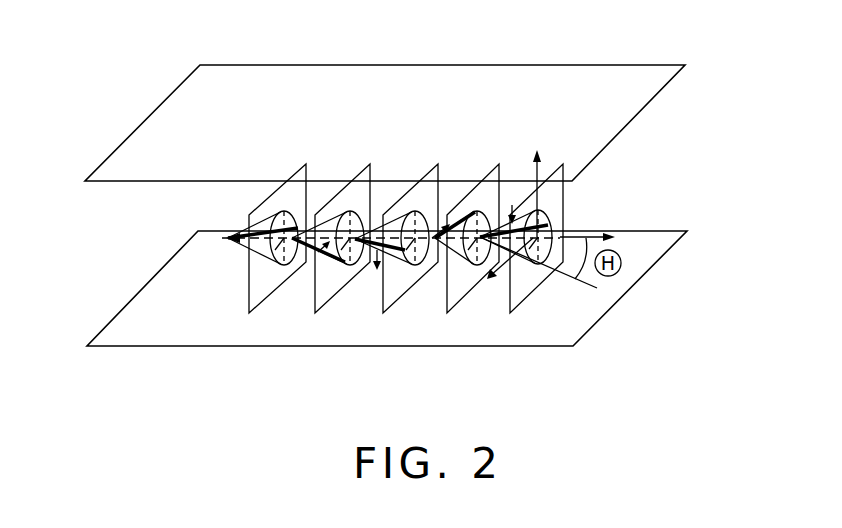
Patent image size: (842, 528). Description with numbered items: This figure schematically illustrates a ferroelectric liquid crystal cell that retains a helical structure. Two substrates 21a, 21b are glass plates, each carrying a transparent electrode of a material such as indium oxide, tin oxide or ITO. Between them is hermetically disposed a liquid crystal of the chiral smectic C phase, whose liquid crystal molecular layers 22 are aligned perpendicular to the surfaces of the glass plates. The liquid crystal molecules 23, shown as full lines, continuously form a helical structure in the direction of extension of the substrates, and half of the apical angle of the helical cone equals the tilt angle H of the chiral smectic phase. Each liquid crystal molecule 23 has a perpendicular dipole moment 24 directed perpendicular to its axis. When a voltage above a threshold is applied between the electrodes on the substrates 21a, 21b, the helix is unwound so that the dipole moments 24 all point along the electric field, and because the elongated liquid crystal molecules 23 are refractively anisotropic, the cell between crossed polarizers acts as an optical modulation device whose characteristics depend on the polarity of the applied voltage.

The substrate 21a is at (623, 67).
The substrate 21b is at (613, 302).
The liquid crystal molecular layers 22 is at (563, 198).
The liquid crystal molecules 23 is at (238, 243).
The dipole moment (P⊥) 24 is at (259, 222).